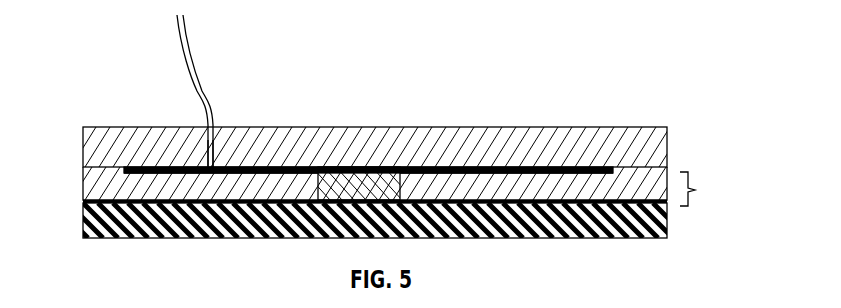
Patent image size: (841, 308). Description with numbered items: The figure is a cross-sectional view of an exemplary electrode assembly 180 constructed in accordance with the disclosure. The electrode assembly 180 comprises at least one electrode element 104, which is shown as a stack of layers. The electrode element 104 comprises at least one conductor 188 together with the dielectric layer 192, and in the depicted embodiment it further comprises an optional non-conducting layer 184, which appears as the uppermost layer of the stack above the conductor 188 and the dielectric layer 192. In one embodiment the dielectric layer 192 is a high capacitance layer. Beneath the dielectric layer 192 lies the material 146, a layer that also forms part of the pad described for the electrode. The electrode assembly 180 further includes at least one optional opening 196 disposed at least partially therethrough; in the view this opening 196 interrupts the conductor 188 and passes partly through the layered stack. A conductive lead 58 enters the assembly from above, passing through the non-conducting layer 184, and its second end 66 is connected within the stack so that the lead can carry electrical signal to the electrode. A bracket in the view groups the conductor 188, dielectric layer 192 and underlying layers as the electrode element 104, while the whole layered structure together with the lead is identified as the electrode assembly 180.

The conductive lead 58 is at (203, 100).
The second end of the conductive lead 66 is at (216, 161).
The electrode element 104 is at (696, 190).
The material 146 is at (83, 206).
The electrode assembly 180 is at (388, 126).
The non-conducting layer 184 is at (92, 133).
The conductor 188 is at (170, 163).
The dielectric layer 192 is at (95, 190).
The opening 196 is at (345, 165).